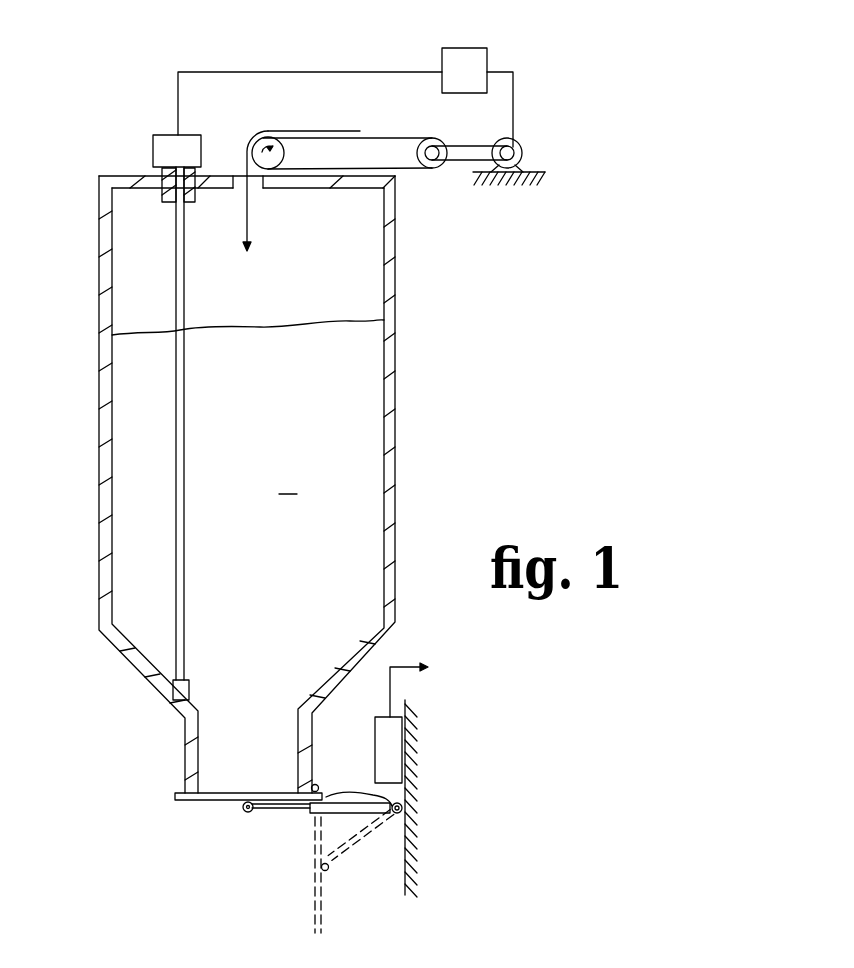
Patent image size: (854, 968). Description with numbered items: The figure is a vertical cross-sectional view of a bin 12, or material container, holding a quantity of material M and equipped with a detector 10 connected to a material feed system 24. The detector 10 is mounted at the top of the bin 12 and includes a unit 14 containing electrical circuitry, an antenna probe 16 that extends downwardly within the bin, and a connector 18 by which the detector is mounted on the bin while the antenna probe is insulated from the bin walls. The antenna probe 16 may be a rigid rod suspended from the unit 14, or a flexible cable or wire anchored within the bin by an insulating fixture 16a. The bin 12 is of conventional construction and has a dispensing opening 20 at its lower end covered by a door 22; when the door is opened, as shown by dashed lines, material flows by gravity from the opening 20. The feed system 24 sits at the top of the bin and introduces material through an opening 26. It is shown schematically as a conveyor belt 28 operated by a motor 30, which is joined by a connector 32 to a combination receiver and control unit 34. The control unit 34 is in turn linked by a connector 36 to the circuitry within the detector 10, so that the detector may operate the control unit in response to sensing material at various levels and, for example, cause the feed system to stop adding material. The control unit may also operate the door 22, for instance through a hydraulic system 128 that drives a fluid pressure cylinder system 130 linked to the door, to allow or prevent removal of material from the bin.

The detector 10 is at (145, 134).
The bin 12 is at (99, 335).
The unit 14 is at (201, 151).
The antenna probe 16 is at (177, 543).
The insulating fixture 16a is at (162, 691).
The connector 18 is at (190, 202).
The dispensing opening 20 is at (296, 758).
The door 22 is at (222, 801).
The material feed system 24 is at (430, 198).
The opening 26 is at (262, 185).
The conveyor belt 28 is at (393, 138).
The motor 30 is at (520, 143).
The connector 32 is at (515, 90).
The receiver and control unit 34 is at (488, 54).
The connector 36 is at (287, 72).
The hydraulic system 128 is at (375, 732).
The fluid pressure cylinder system 130 is at (375, 825).